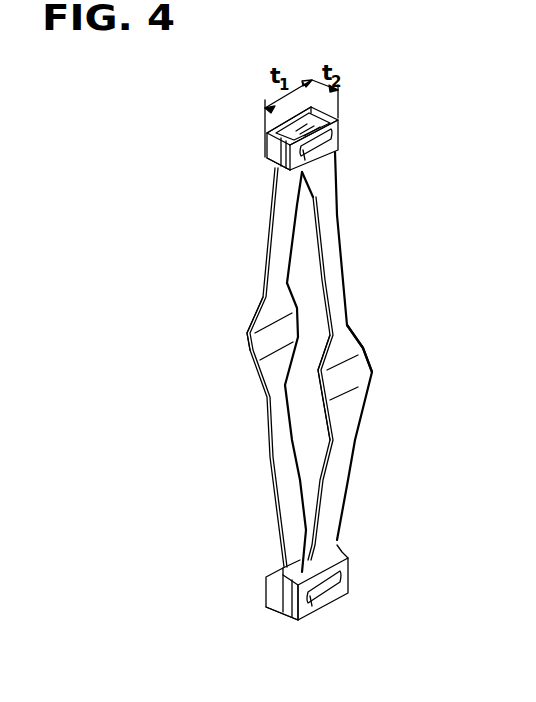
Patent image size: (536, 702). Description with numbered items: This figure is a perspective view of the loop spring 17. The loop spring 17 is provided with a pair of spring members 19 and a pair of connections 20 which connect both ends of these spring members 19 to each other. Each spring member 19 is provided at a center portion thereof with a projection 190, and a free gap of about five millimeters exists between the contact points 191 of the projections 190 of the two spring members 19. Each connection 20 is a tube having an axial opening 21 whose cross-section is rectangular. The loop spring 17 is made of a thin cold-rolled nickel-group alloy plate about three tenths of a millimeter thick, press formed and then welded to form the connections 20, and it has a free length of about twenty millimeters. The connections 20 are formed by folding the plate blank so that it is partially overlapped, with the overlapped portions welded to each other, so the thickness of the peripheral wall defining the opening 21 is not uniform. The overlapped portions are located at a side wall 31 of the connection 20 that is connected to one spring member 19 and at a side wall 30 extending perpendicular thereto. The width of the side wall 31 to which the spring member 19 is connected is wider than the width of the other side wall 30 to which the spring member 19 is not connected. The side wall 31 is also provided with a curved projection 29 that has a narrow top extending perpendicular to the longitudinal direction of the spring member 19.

The loop spring 17 is at (184, 307).
The spring member 19 is at (340, 262).
The projection 190 is at (364, 350).
The contact point 191 is at (355, 370).
The connection 20 is at (340, 131).
The axial opening 21 is at (312, 105).
The curved projection 29 is at (325, 148).
The side wall 30 is at (267, 159).
The side wall 31 is at (265, 133).